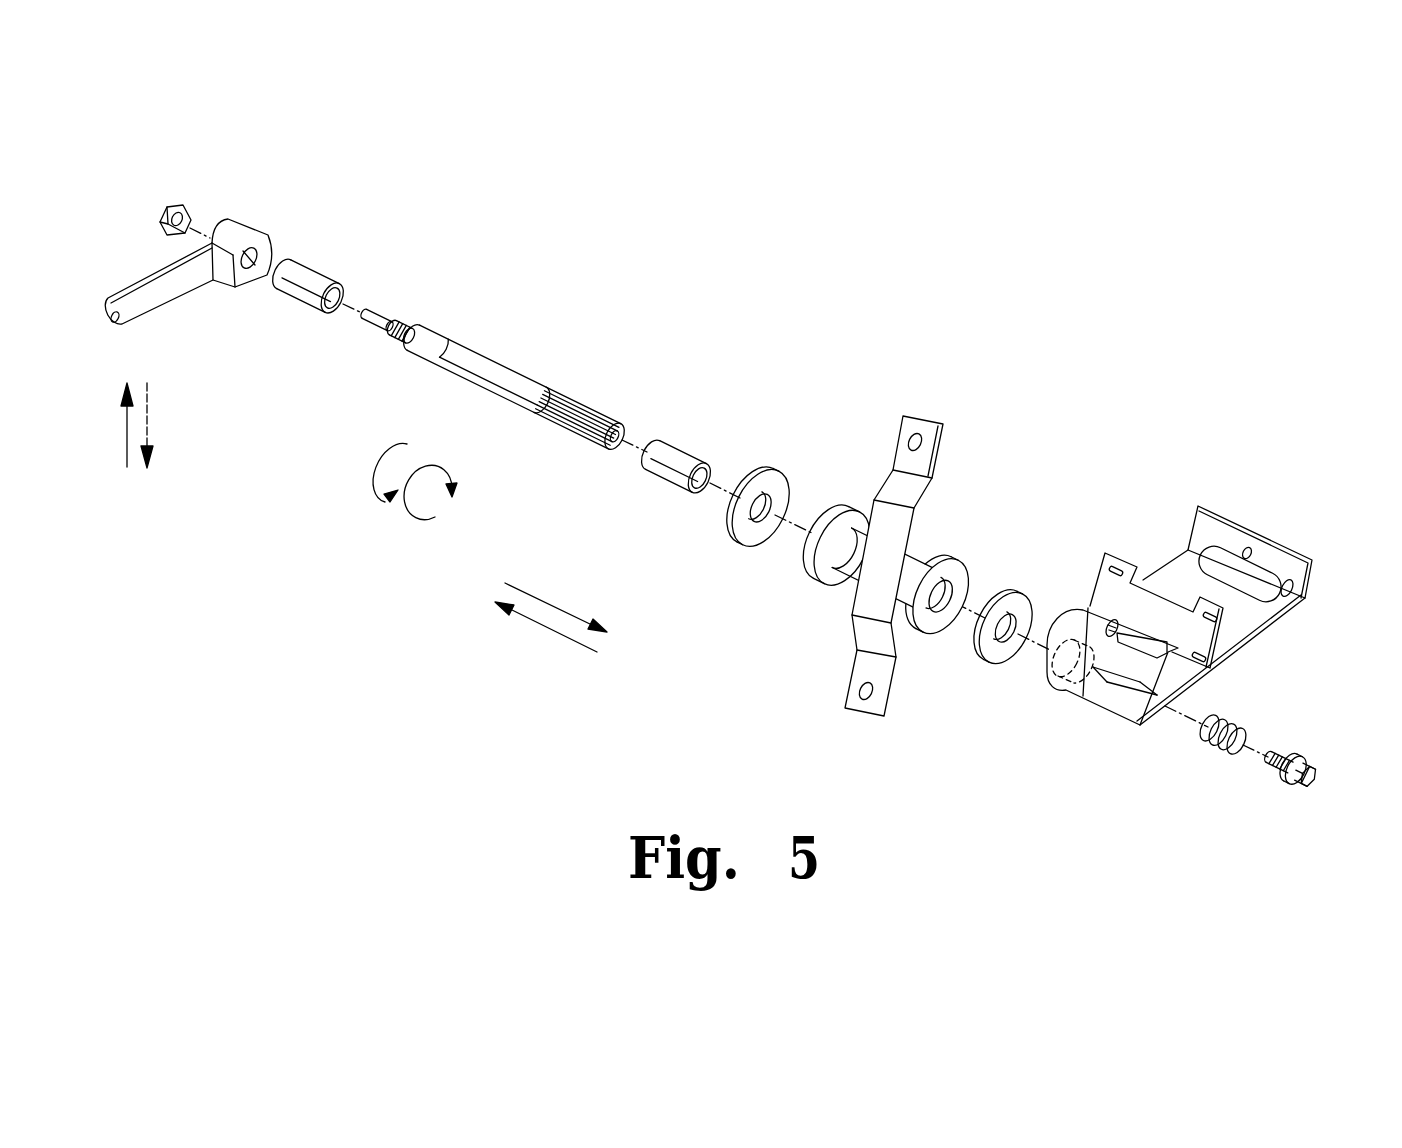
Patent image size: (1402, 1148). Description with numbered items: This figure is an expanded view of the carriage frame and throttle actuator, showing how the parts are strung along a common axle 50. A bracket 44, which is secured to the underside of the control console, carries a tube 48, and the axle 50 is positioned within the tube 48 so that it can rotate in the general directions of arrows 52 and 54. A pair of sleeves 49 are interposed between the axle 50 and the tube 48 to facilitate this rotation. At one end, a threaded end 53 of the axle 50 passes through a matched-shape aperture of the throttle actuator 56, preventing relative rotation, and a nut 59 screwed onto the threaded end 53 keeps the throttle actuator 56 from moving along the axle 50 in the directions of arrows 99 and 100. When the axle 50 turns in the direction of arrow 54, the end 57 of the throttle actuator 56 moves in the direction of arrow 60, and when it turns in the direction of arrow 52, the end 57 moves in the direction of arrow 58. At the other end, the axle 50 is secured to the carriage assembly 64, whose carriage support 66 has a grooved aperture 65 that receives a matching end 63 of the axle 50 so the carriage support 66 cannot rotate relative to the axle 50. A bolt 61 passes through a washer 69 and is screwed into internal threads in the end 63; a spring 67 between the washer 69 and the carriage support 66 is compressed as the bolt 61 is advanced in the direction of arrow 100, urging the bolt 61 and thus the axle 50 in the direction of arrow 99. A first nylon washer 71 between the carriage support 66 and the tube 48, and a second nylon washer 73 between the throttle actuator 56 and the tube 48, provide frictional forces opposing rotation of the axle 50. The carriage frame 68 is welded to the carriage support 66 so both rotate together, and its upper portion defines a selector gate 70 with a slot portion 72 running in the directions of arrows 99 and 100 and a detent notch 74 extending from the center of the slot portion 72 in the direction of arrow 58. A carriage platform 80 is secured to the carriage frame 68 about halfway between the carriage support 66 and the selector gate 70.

The bracket 44 is at (922, 411).
The tube 48 is at (889, 539).
The sleeves 49 is at (323, 281).
The axle 50 is at (487, 366).
The arrow 52 is at (445, 470).
The threaded end 53 is at (368, 326).
The arrow 54 is at (407, 444).
The throttle actuator 56 is at (162, 293).
The end 57 is at (118, 293).
The arrow 58 is at (123, 432).
The nut 59 is at (176, 203).
The arrow 60 is at (150, 418).
The bolt 61 is at (1315, 752).
The end 63 is at (587, 415).
The carriage assembly 64 is at (1227, 562).
The grooved aperture 65 is at (1050, 652).
The carriage support 66 is at (1080, 678).
The spring 67 is at (1213, 745).
The carriage frame 68 is at (1168, 578).
The washer 69 is at (1317, 774).
The selector gate 70 is at (1280, 553).
The first nylon washer 71 is at (1017, 590).
The slot portion 72 is at (1308, 592).
The second nylon washer 73 is at (768, 470).
The detent notch 74 is at (1273, 562).
The carriage platform 80 is at (1223, 637).
The arrow 99 is at (557, 606).
The arrow 100 is at (548, 632).